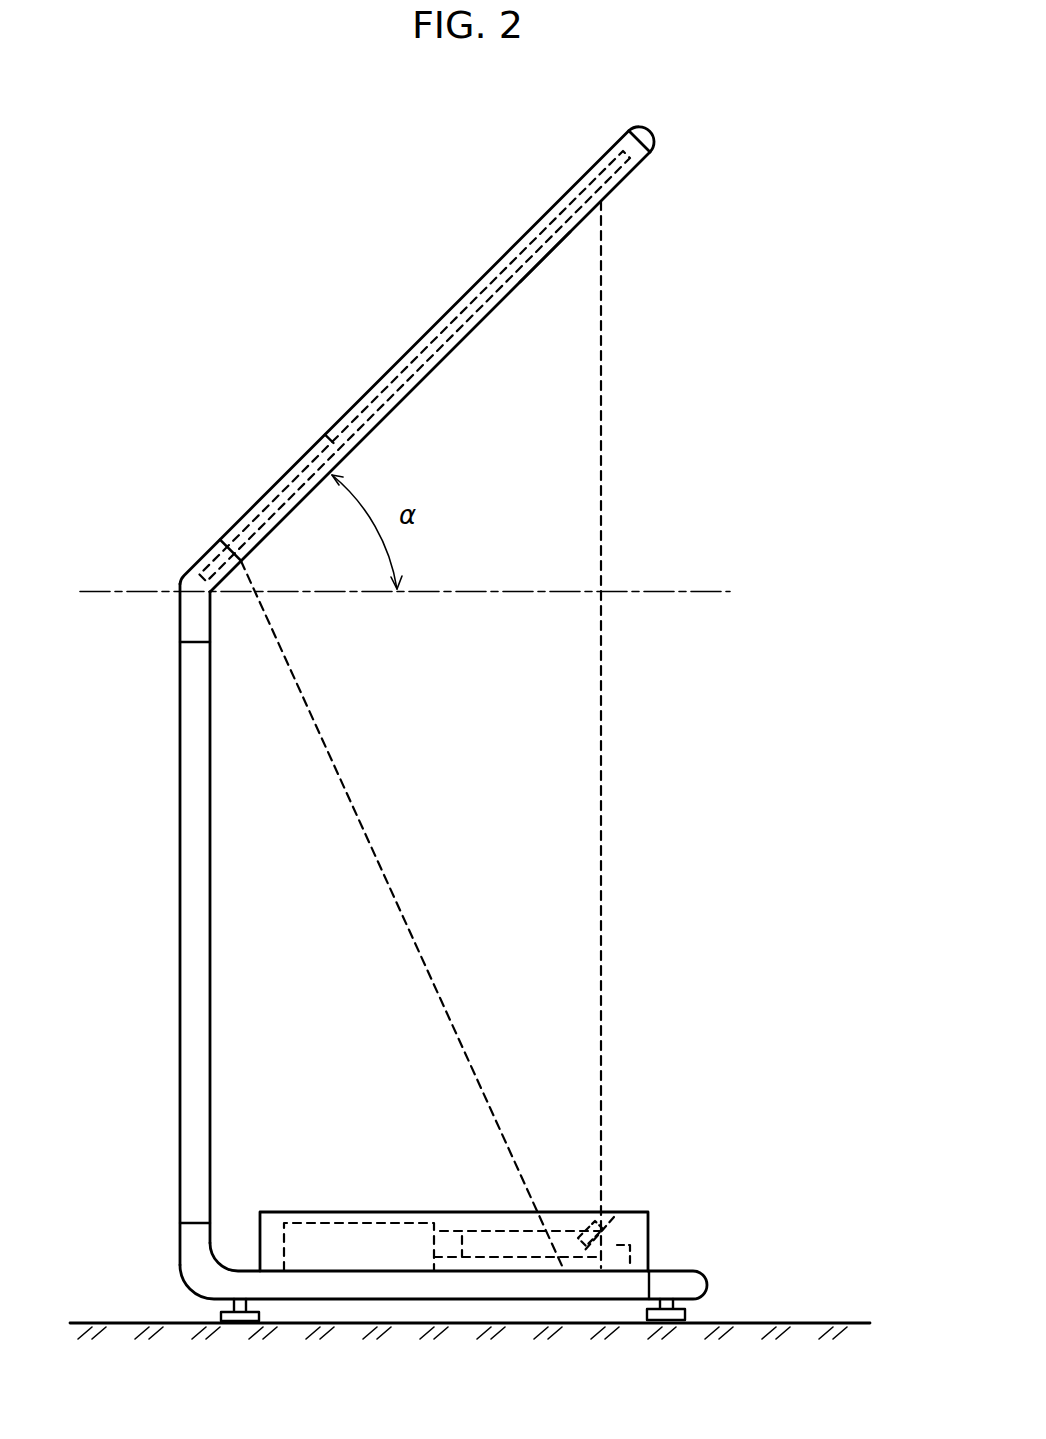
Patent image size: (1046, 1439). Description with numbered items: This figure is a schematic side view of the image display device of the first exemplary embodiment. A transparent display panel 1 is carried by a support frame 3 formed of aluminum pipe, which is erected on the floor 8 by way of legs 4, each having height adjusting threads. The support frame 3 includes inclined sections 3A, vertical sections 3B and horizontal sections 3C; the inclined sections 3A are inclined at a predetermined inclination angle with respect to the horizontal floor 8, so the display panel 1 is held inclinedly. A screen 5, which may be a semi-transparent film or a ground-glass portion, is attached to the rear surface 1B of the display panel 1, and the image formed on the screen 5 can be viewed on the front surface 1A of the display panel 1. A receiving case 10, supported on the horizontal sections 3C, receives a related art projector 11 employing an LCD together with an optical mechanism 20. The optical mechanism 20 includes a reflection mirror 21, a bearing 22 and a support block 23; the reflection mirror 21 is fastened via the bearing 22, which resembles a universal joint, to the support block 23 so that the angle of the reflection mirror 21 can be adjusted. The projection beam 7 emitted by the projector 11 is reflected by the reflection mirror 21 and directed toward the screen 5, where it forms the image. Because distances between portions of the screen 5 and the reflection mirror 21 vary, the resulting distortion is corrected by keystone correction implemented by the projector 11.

The display panel 1 is at (256, 502).
The front surface 1A is at (325, 434).
The rear surface 1B is at (544, 259).
The support frame 3 is at (612, 140).
The inclined sections 3A is at (393, 366).
The vertical sections 3B is at (198, 936).
The horizontal sections 3C is at (433, 1298).
The legs 4 is at (238, 1323).
The screen 5 is at (468, 312).
The projection beam 7 is at (582, 758).
The floor 8 is at (150, 1323).
The receiving case 10 is at (352, 1212).
The projector 11 is at (382, 1233).
The optical mechanism 20 is at (716, 1135).
The reflection mirror 21 is at (610, 1220).
The bearing 22 is at (597, 1247).
The support block 23 is at (630, 1260).